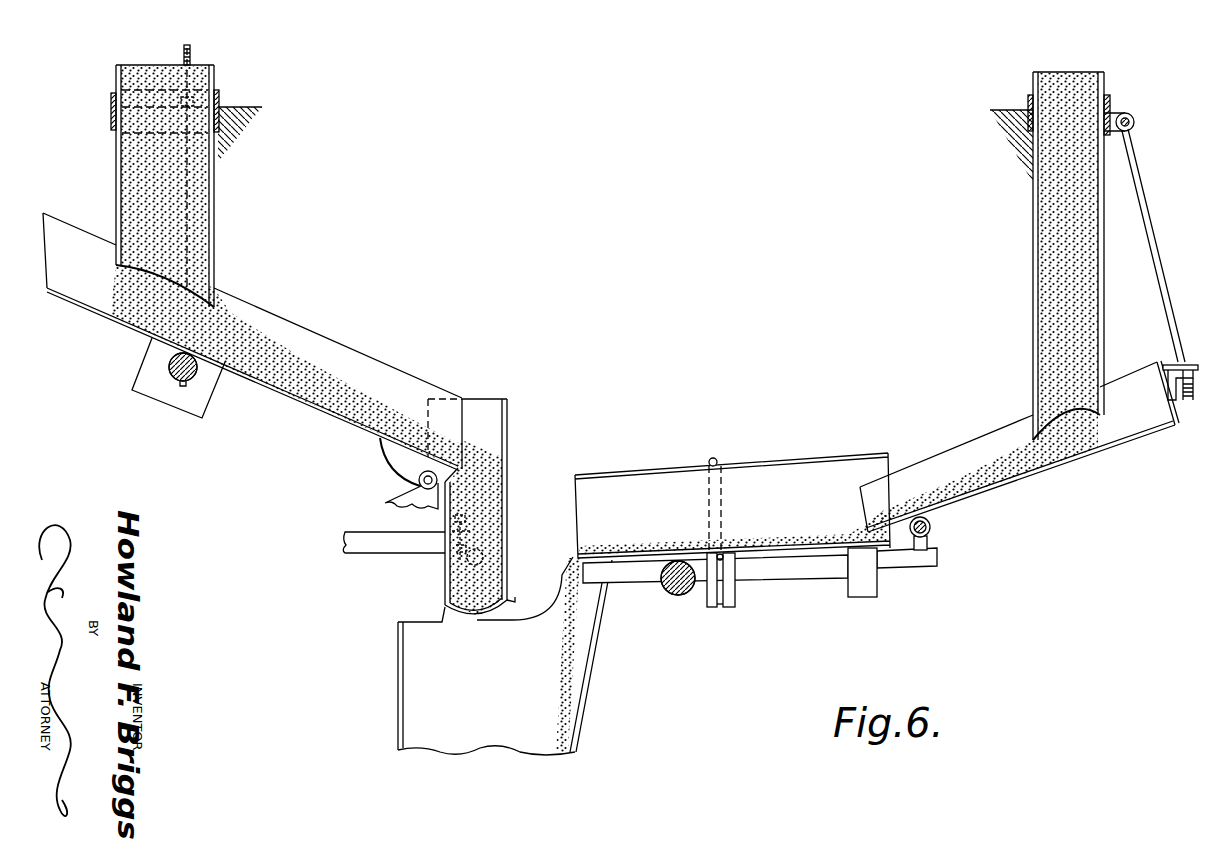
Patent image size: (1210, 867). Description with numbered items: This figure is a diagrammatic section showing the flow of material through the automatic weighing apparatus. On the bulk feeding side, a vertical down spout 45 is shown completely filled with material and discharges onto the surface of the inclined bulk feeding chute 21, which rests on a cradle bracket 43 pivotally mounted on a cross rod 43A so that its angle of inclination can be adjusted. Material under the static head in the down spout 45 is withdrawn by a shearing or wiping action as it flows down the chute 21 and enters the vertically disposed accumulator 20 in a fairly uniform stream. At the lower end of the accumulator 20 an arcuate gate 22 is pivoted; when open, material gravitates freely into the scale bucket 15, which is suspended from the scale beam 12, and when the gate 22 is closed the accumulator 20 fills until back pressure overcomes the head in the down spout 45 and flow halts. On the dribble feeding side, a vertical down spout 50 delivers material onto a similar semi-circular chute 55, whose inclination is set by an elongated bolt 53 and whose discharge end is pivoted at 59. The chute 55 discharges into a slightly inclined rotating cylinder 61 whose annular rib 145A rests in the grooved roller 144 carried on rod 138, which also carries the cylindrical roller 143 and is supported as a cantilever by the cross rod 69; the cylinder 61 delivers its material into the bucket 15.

The vertical down spout 45 is at (214, 205).
The bulk feeding chute 21 is at (296, 402).
The bracket 43 is at (135, 382).
The cross rod 43A is at (173, 380).
The arcuate gate 22 is at (508, 590).
The accumulator 20 is at (507, 457).
The scale beam 12 is at (385, 548).
The scale bucket 15 is at (398, 678).
The cylinder 61 is at (650, 469).
The annular rib 145A is at (716, 460).
The rod 138 is at (780, 580).
The cross rod 69 is at (663, 590).
The grooved roller 144 is at (732, 608).
The cylindrical roller 143 is at (862, 598).
The pivot 59 is at (931, 527).
The chute 55 is at (1016, 483).
The vertical down spout 50 is at (1033, 313).
The elongated bolt 53 is at (1162, 268).